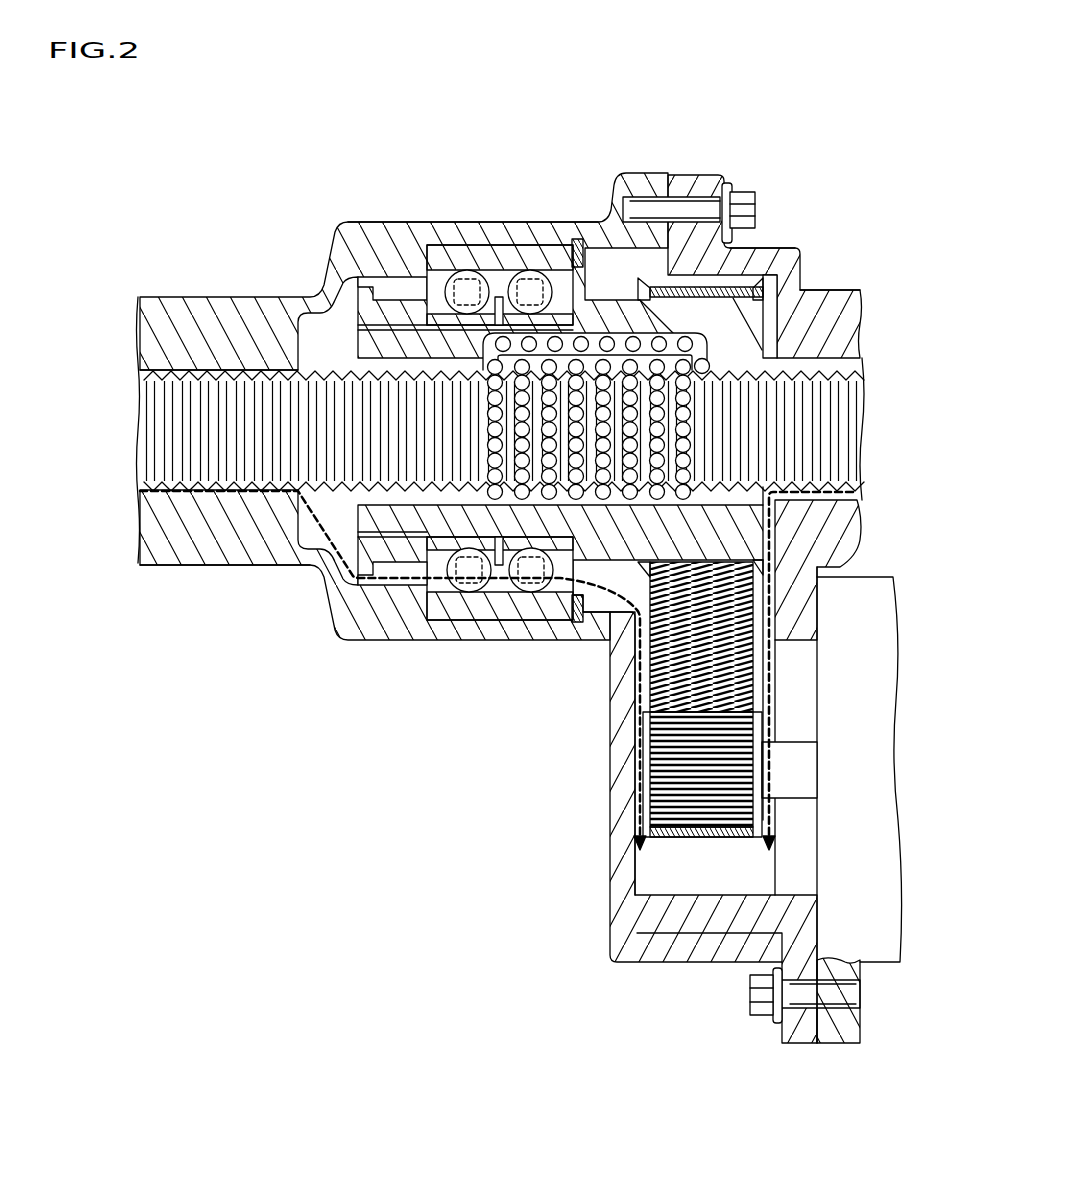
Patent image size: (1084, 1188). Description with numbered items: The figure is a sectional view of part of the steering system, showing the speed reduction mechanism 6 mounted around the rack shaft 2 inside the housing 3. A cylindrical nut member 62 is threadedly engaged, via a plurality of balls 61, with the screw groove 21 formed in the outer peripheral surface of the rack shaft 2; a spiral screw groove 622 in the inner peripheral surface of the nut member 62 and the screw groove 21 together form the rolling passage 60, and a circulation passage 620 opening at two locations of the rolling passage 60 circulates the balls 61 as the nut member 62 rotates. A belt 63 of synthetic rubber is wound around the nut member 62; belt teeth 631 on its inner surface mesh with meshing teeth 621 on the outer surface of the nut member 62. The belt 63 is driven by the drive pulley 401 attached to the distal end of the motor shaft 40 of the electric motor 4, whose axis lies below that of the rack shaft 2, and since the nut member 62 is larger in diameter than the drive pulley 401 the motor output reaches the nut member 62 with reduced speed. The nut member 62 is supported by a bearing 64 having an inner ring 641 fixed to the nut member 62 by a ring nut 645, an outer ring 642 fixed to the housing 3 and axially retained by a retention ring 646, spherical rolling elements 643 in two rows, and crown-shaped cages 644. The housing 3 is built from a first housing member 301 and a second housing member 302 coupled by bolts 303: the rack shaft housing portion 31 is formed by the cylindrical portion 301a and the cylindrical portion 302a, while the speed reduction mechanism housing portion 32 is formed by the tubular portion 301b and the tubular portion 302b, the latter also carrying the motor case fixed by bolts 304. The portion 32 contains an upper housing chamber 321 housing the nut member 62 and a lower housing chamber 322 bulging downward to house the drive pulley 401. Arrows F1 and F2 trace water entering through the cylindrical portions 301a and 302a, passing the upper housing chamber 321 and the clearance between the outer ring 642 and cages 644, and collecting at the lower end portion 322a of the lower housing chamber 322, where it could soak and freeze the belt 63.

The rack shaft 2 is at (501, 400).
The screw groove 21 is at (327, 376).
The housing 3 is at (546, 560).
The first housing member 301 is at (419, 243).
The cylindrical portion 301a is at (253, 332).
The tubular portion 301b is at (500, 228).
The second housing member 302 is at (797, 237).
The cylindrical portion 302a is at (838, 318).
The tubular portion 302b is at (740, 256).
The bolt 303 is at (742, 188).
The bolt 304 is at (752, 998).
The rack shaft housing portion 31 is at (188, 570).
The speed reduction mechanism housing portion 32 is at (327, 634).
The upper housing chamber 321 is at (605, 257).
The lower housing chamber 322 is at (760, 695).
The lower end portion 322a is at (668, 887).
The electric motor 4 is at (851, 810).
The motor shaft 40 is at (798, 765).
The drive pulley 401 is at (645, 782).
The speed reduction mechanism 6 is at (393, 297).
The rolling passage 60 is at (673, 522).
The ball 61 is at (686, 423).
The nut member 62 is at (765, 310).
The circulation passage 620 is at (662, 340).
The meshing tooth 621 is at (740, 299).
The screw groove 622 is at (665, 501).
The belt 63 is at (652, 687).
The belt tooth 631 is at (652, 637).
The bearing 64 is at (459, 594).
The inner ring 641 is at (432, 548).
The outer ring 642 is at (440, 603).
The rolling element 643 is at (545, 548).
The cage 644 is at (503, 543).
The ring nut 645 is at (366, 564).
The retention ring 646 is at (571, 630).
The arrow F1 is at (642, 748).
The arrow F2 is at (771, 632).